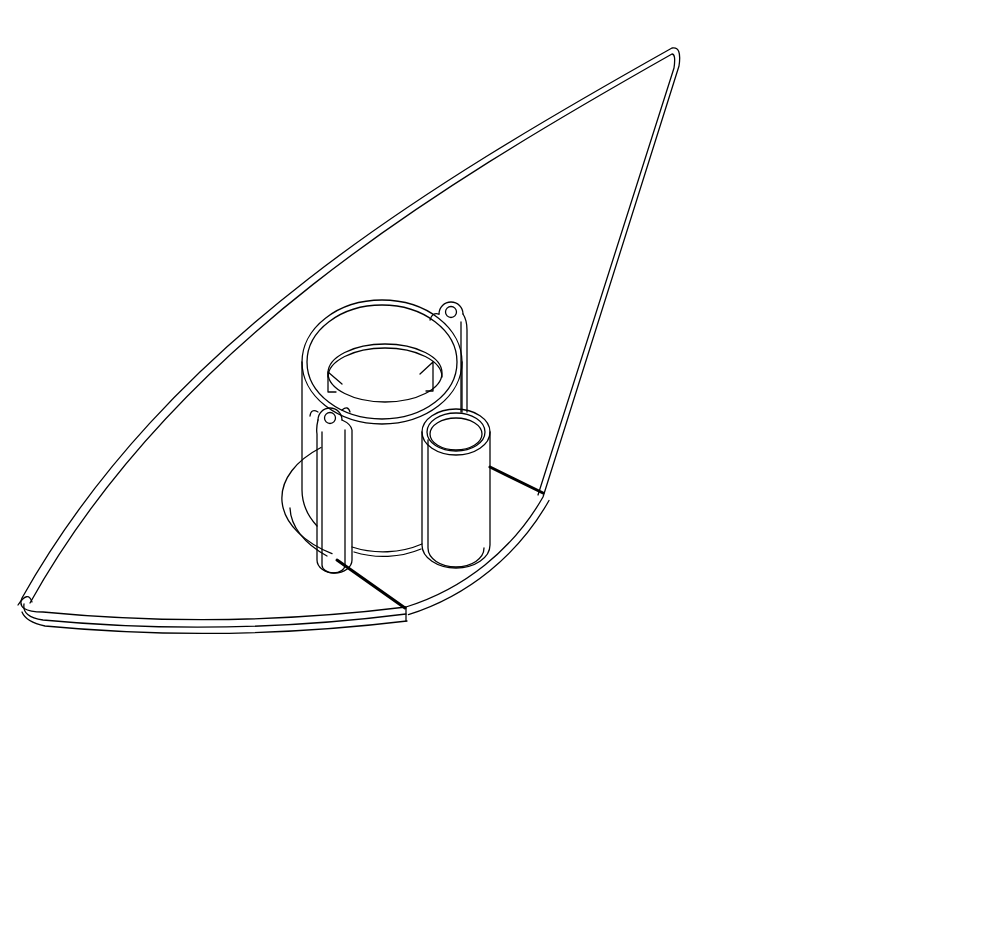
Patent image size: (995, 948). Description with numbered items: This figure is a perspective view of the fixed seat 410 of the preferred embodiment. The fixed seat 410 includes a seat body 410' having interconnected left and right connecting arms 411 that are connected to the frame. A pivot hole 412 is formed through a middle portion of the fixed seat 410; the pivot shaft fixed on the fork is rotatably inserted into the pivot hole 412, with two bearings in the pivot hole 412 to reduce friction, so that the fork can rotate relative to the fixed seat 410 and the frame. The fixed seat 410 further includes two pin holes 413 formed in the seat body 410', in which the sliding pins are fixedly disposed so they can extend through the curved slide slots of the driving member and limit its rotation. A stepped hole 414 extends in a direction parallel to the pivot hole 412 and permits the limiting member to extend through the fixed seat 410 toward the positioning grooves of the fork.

The fixed seat 410 is at (369, 462).
The seat body 410' is at (349, 341).
The connecting arms 411 is at (563, 261).
The pivot hole 412 is at (367, 382).
The pin holes 413 is at (336, 418).
The stepped hole 414 is at (458, 433).